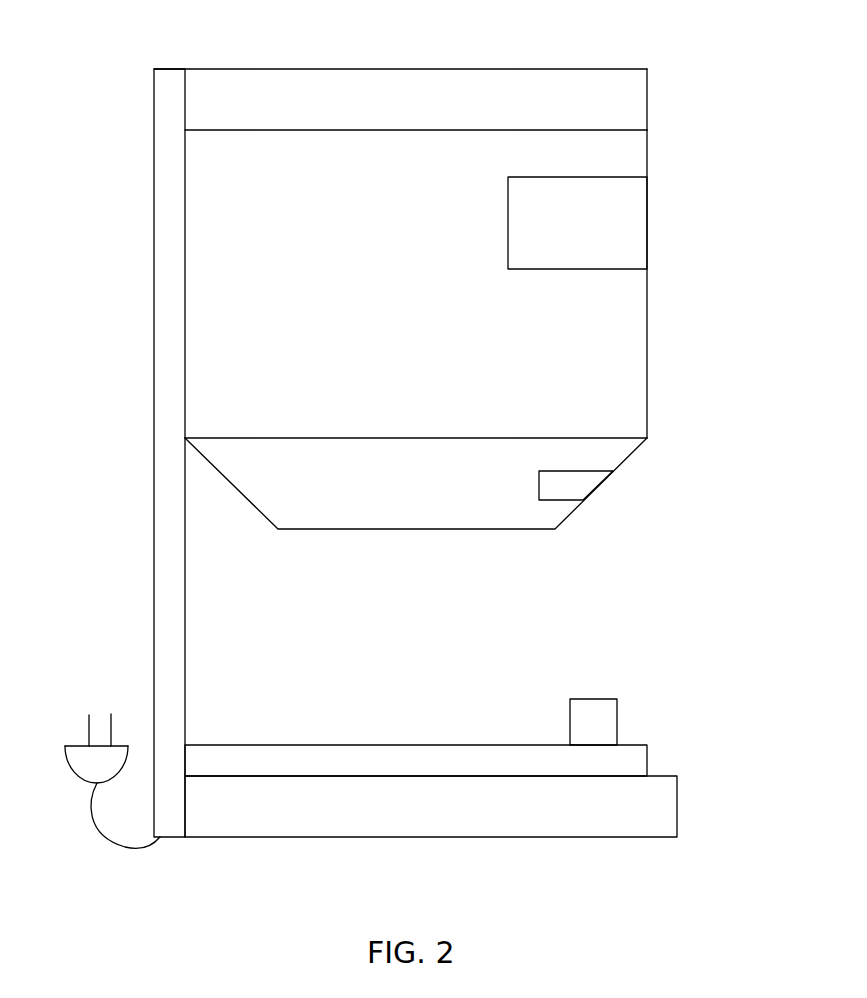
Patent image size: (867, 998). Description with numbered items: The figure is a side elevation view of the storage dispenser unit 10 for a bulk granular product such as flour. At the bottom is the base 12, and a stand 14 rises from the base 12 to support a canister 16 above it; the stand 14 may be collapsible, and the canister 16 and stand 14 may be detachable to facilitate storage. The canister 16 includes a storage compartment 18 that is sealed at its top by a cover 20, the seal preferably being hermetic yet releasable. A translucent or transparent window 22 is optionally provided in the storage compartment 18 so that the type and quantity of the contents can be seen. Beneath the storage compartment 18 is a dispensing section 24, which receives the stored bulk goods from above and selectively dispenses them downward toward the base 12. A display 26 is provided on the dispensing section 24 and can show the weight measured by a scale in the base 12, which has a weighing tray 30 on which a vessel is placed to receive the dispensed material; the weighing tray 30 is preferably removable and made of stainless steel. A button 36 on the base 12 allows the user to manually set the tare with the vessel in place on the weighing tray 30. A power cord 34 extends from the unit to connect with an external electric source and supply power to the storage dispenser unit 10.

The storage dispenser unit 10 is at (360, 117).
The base 12 is at (677, 805).
The stand 14 is at (185, 576).
The canister 16 is at (647, 283).
The storage compartment 18 is at (615, 392).
The cover 20 is at (647, 99).
The window 22 is at (647, 220).
The dispensing section 24 is at (570, 515).
The display 26 is at (602, 482).
The weighing tray 30 is at (647, 760).
The power cord 34 is at (89, 715).
The button 36 is at (617, 699).